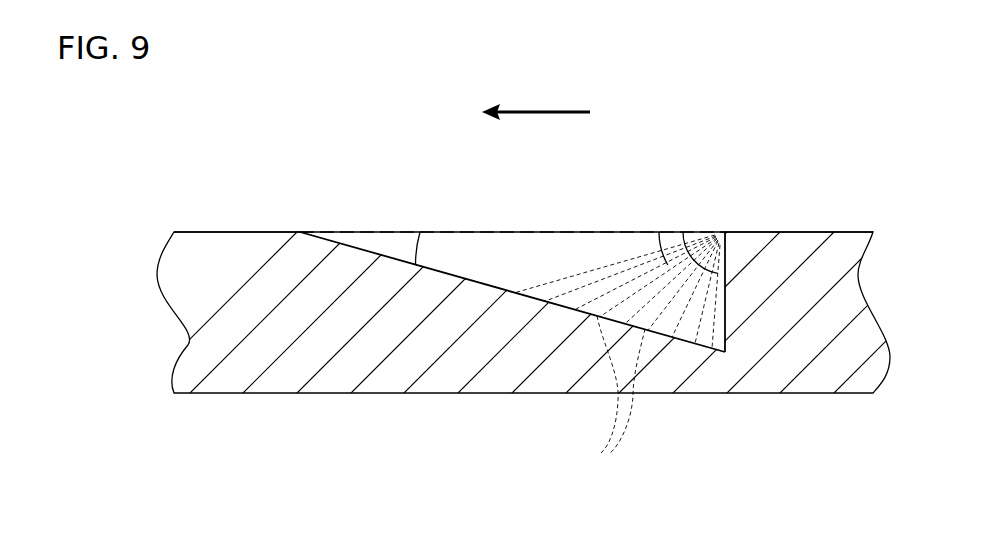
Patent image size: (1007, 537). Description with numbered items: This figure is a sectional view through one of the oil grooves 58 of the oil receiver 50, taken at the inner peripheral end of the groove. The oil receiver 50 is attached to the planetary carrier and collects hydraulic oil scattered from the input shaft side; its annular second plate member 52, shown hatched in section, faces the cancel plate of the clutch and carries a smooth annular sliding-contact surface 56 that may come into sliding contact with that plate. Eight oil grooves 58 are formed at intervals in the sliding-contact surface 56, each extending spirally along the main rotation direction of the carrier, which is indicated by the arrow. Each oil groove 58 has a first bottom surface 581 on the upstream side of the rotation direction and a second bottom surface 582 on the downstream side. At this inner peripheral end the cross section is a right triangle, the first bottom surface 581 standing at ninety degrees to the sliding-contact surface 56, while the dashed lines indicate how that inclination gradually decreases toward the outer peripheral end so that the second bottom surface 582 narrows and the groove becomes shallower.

The oil receiver 50 is at (213, 230).
The second plate member 52 is at (270, 240).
The sliding-contact surface 56 is at (770, 232).
The oil groove 58 is at (488, 283).
The first bottom surface 581 is at (672, 336).
The second bottom surface 582 is at (360, 240).